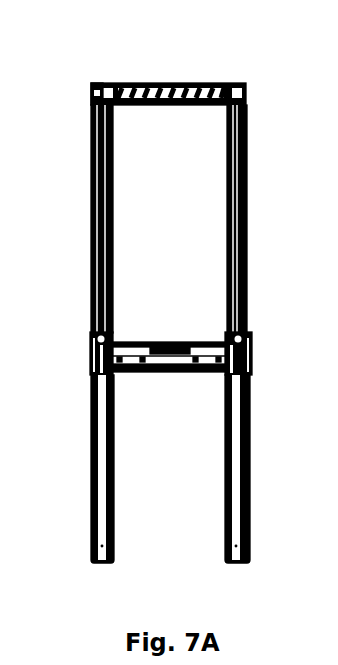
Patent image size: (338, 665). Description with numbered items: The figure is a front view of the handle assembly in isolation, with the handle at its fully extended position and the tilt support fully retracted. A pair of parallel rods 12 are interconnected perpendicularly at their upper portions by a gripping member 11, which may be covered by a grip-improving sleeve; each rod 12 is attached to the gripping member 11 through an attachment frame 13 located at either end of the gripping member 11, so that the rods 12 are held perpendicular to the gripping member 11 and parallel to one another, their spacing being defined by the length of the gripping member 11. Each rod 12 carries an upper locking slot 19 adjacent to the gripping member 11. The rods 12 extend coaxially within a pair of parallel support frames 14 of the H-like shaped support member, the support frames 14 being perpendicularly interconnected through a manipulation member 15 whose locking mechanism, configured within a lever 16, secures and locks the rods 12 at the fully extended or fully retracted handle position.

The gripping member 11 is at (171, 83).
The parallel rods 12 is at (248, 197).
The attachment frame 13 is at (92, 94).
The support frames 14 is at (238, 447).
The manipulation member 15 is at (243, 351).
The lever 16 is at (172, 343).
The upper locking slot 19 is at (113, 134).